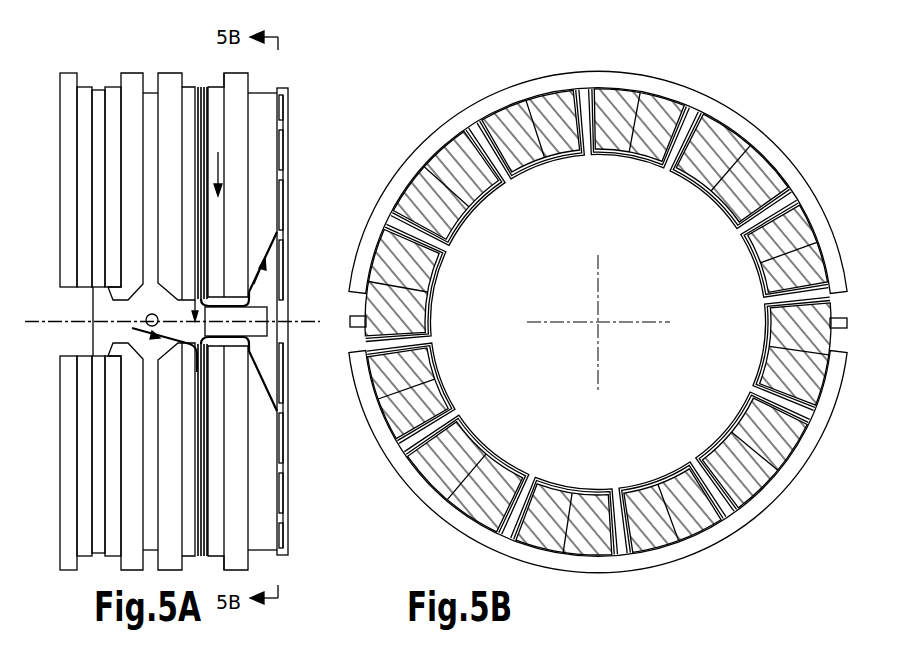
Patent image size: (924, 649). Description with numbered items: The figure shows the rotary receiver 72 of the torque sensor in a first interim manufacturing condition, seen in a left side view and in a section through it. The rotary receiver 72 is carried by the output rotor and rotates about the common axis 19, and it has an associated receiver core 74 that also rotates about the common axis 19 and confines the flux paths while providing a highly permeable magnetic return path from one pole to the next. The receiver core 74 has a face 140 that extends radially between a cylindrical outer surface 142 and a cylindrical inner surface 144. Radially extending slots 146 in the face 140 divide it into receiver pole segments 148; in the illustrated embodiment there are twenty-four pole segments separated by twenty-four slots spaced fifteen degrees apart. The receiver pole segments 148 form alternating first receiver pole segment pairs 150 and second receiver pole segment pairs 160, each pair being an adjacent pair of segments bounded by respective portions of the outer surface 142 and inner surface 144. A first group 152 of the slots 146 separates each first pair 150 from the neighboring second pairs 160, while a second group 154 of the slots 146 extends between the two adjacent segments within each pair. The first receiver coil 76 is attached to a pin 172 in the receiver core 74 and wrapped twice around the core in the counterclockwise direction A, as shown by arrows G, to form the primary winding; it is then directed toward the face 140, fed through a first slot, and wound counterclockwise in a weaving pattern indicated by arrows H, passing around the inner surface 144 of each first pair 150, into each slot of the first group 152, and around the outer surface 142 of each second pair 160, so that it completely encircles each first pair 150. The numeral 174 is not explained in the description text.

In FIG. 5A, the rotary receiver 72 is at (137, 72).
In FIG. 5B, the rotary receiver 72 is at (680, 81).
In FIG. 5A, the receiver core 74 is at (237, 85).
In FIG. 5B, the receiver core 74 is at (718, 115).
In FIG. 5A, the first receiver coil 76 is at (262, 268).
In FIG. 5B, the first receiver coil 76 is at (447, 243).
In FIG. 5A, the face 140 is at (290, 112).
In FIG. 5A, the cylindrical outer surface 142 is at (288, 88).
In FIG. 5A, the common axis 19 is at (40, 321).
In FIG. 5B, the common axis 19 is at (599, 322).
In FIG. 5A, the pin 172 is at (152, 314).
In FIG. 5B, the pin 172 is at (356, 338).
In FIG. 5B, the winding terminal 174 is at (840, 328).
In FIG. 5A, the arrows G is at (218, 160).
In FIG. 5B, the arrows H is at (447, 316).
In FIG. 5B, the counterclockwise direction A is at (462, 82).
In FIG. 5B, the cylindrical inner surface 144 is at (638, 164).
In FIG. 5B, the slots 146 is at (560, 90).
In FIG. 5B, the receiver pole segments 148 is at (500, 122).
In FIG. 5B, the first receiver pole segment pairs 150 is at (480, 502).
In FIG. 5B, the first group of slots 152 is at (790, 434).
In FIG. 5B, the second group of slots 154 is at (480, 450).
In FIG. 5B, the second receiver pole segment pairs 160 is at (425, 368).